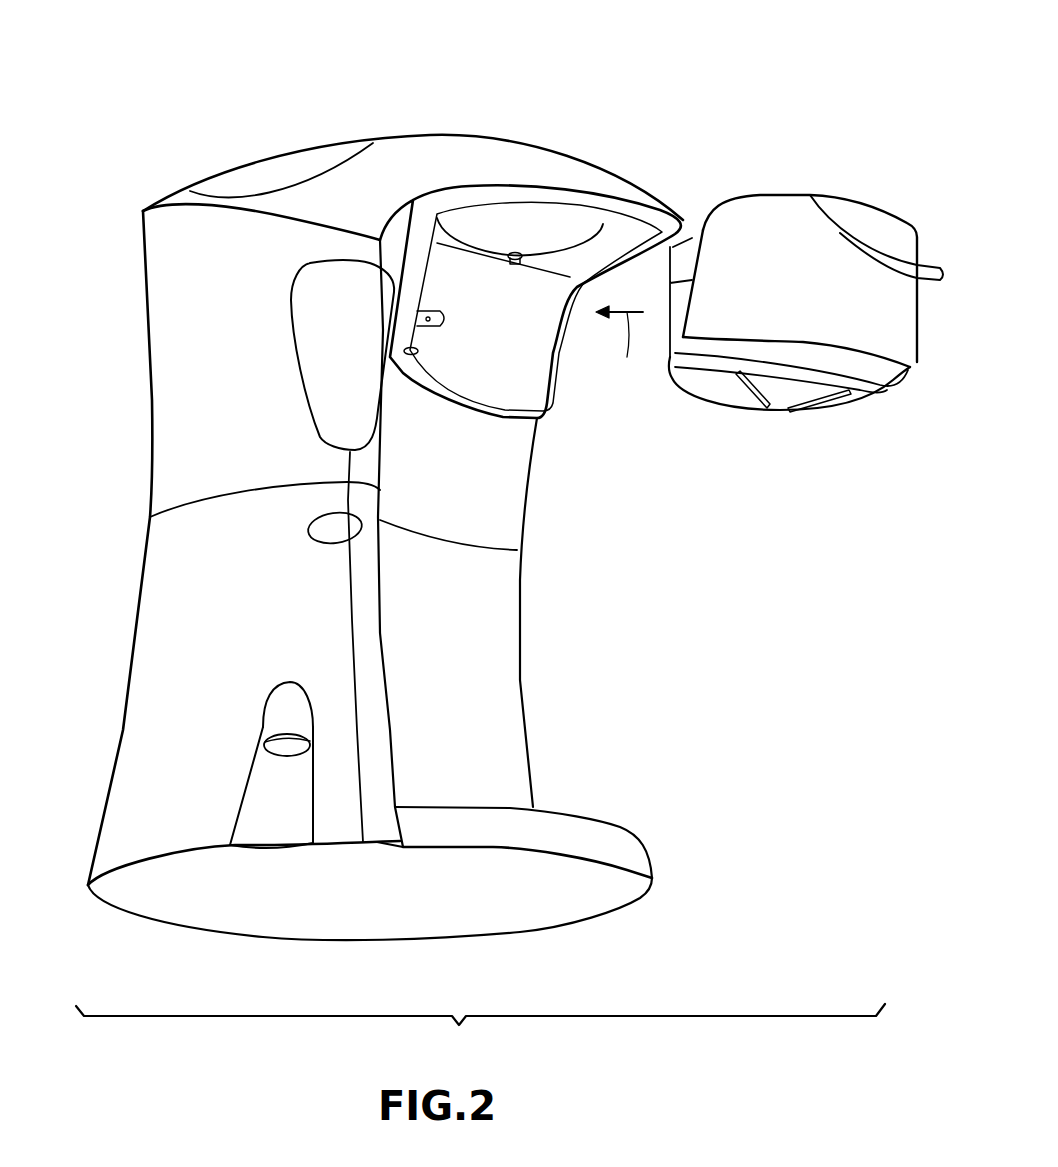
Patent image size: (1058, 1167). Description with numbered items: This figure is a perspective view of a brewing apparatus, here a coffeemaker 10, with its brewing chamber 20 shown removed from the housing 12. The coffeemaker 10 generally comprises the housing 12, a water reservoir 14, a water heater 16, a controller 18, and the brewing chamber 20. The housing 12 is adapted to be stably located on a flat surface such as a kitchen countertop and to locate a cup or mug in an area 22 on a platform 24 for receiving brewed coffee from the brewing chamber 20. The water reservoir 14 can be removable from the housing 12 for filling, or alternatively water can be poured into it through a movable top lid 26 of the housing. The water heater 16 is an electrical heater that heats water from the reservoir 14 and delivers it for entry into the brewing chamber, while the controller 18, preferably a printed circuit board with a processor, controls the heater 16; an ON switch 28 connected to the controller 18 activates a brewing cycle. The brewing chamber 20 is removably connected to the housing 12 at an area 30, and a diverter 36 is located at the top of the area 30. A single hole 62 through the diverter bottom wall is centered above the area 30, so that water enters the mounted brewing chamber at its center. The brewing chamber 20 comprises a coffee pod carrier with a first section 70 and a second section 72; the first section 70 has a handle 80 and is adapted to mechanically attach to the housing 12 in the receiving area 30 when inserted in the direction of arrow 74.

The coffeemaker 10 is at (470, 90).
The housing 12 is at (152, 550).
The water reservoir 14 is at (313, 275).
The water heater 16 is at (460, 576).
The controller 18 is at (160, 828).
The brewing chamber 20 is at (793, 330).
The area 22 is at (593, 748).
The platform 24 is at (620, 826).
The movable top lid 26 is at (316, 152).
The ON switch 28 is at (275, 735).
The area 30 is at (564, 397).
The diverter 36 is at (553, 230).
The hole 62 is at (514, 268).
The first section 70 is at (917, 368).
The second section 72 is at (692, 240).
The arrow 74 is at (619, 349).
The handle 80 is at (930, 265).